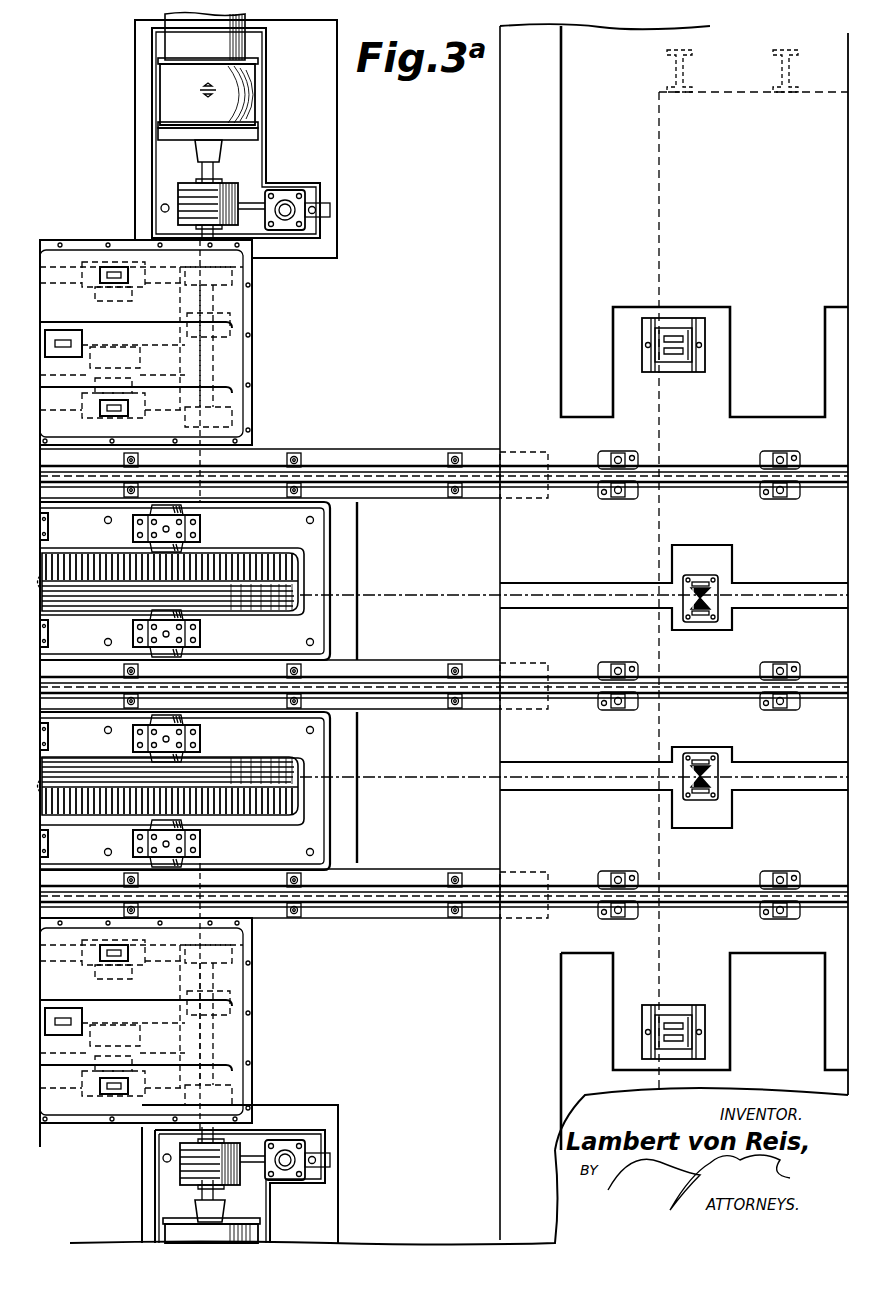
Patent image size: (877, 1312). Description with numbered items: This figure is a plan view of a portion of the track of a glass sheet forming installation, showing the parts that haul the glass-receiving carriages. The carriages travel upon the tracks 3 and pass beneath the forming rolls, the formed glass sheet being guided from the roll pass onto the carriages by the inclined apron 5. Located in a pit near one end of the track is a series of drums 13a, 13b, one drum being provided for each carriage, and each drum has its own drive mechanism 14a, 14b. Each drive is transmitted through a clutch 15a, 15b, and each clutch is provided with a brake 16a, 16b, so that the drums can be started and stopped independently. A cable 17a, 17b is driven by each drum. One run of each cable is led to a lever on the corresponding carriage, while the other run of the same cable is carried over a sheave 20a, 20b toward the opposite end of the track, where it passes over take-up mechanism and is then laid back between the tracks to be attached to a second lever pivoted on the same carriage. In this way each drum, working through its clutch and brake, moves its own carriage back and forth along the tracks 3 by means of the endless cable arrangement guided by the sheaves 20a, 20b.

The tracks 3 is at (830, 488).
The inclined apron 5 is at (590, 686).
The drum 13a is at (300, 776).
The drum 13b is at (297, 585).
The drive mechanism 14a is at (190, 1243).
The drive mechanism 14b is at (245, 90).
The clutch 15a is at (178, 1158).
The clutch 15b is at (240, 222).
The brake 16a is at (290, 1150).
The brake 16b is at (312, 207).
The cable 17a is at (450, 775).
The cable 17b is at (443, 600).
The sheave 20a is at (718, 787).
The sheave 20b is at (712, 600).